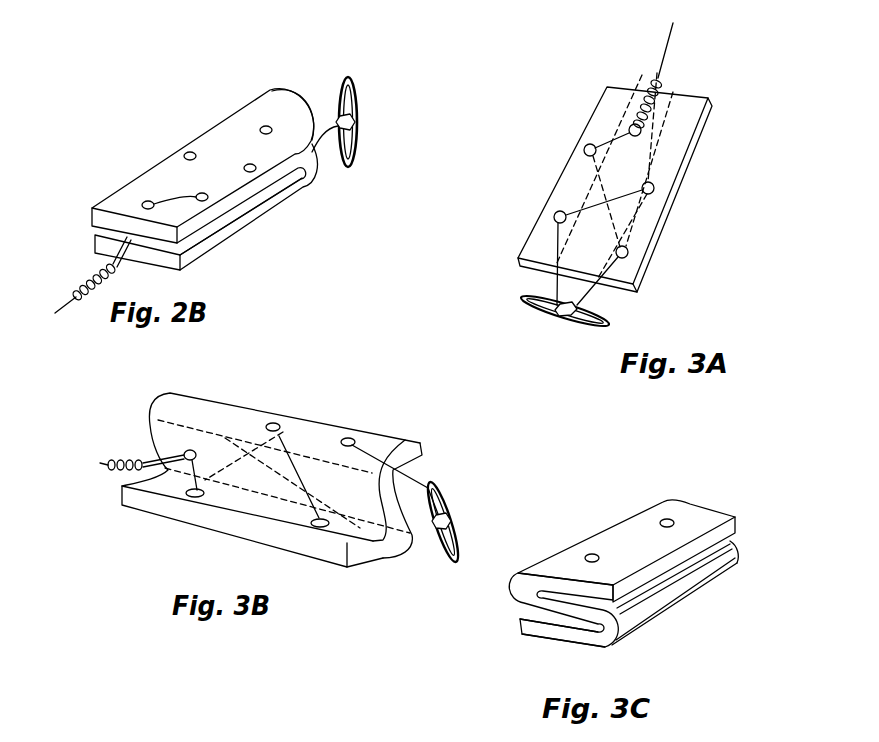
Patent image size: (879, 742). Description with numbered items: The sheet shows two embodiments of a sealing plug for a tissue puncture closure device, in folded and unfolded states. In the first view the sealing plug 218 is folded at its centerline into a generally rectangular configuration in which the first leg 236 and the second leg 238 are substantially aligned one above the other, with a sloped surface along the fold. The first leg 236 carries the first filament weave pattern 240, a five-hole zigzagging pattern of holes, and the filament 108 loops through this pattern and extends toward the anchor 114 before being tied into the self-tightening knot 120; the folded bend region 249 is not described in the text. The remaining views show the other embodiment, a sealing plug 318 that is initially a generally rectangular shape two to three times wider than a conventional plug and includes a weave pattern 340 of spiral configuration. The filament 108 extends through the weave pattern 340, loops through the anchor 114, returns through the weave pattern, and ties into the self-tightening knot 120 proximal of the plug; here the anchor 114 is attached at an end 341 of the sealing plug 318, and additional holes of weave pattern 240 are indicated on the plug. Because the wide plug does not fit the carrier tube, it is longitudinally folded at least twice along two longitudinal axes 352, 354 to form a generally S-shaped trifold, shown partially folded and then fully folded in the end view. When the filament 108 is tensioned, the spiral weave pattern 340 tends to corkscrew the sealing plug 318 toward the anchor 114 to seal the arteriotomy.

In FIG. 2B, the second leg 238 is at (193, 143).
In FIG. 2B, the first leg 236 is at (288, 195).
In FIG. 2B, the rounded bend end 249 is at (291, 102).
In FIG. 2B, the sealing plug 218 is at (272, 128).
In FIG. 3A, the self-tightening knot 120 is at (657, 77).
In FIG. 3A, the longitudinal axis 352 is at (682, 80).
In FIG. 3A, the longitudinal axis 354 is at (591, 145).
In FIG. 3B, the longitudinal axis 354 is at (352, 466).
In FIG. 3A, the sealing plug 318 is at (540, 160).
In FIG. 3B, the sealing plug 318 is at (331, 412).
In FIG. 3C, the sealing plug 318 is at (739, 512).
In FIG. 3A, the first filament weave pattern 240 is at (558, 212).
In FIG. 3B, the first filament weave pattern 240 is at (125, 460).
In FIG. 3A, the weave pattern 340 is at (653, 191).
In FIG. 3B, the weave pattern 340 is at (284, 446).
In FIG. 3A, the filament 108 is at (556, 281).
In FIG. 3B, the filament 108 is at (423, 488).
In FIG. 3A, the anchor 114 is at (527, 308).
In FIG. 3B, the anchor 114 is at (458, 516).
In FIG. 3C, the end 341 is at (527, 633).